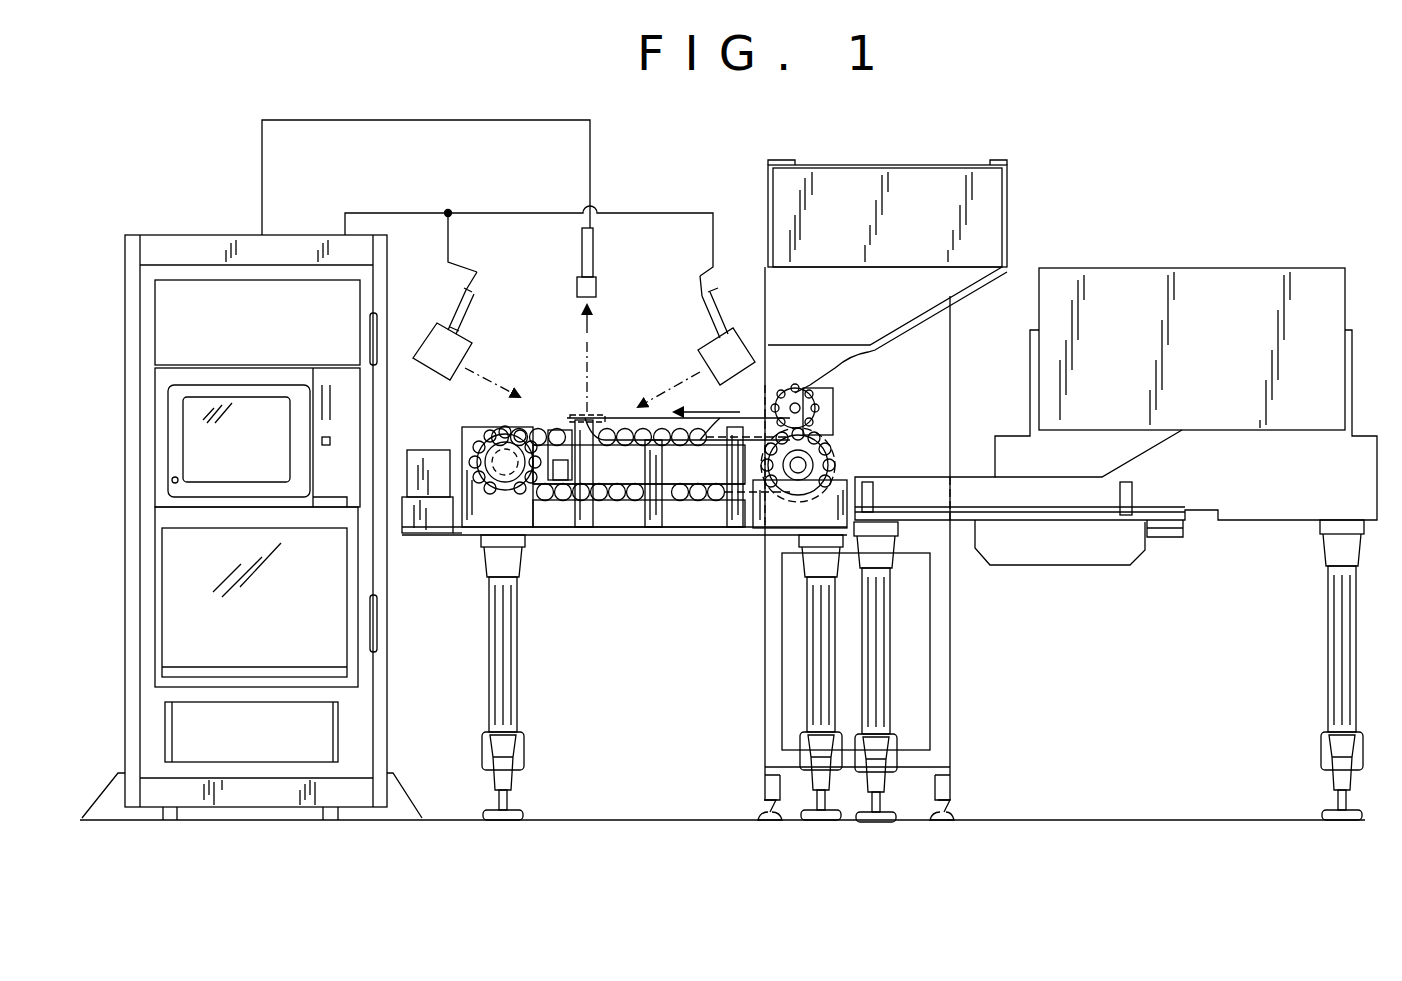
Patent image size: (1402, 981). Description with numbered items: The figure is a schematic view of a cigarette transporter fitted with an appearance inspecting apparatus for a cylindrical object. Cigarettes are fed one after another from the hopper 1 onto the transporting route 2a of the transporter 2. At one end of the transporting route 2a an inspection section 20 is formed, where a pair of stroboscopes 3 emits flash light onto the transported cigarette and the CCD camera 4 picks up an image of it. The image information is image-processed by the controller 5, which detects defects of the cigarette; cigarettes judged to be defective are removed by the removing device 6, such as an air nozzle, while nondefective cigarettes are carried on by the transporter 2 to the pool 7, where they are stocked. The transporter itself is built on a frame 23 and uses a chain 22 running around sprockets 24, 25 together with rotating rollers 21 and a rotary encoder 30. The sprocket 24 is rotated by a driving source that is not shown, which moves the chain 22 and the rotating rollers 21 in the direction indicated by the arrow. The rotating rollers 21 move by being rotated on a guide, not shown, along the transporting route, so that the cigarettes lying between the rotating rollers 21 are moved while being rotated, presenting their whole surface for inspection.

The hopper 1 is at (1010, 236).
The transporter 2 is at (651, 540).
The transporting route 2a is at (632, 443).
The stroboscopes 3 is at (458, 343).
The CCD camera 4 is at (597, 268).
The controller 5 is at (206, 245).
The removing device 6 is at (553, 430).
The pool 7 is at (1165, 278).
The inspection section 20 is at (592, 414).
The rotating rollers 21 is at (521, 430).
The chain 22 is at (538, 428).
The frame 23 is at (573, 532).
The sprocket 24 is at (470, 435).
The sprocket 25 is at (815, 452).
The rotary encoder 30 is at (510, 482).